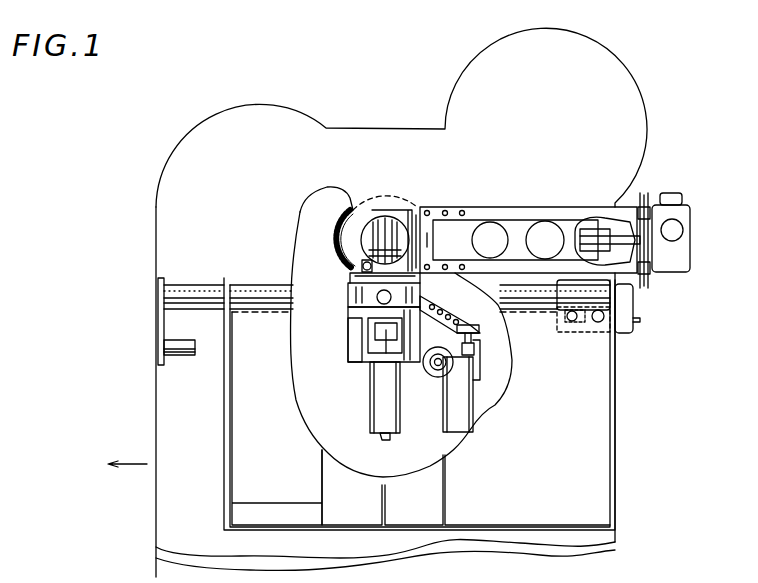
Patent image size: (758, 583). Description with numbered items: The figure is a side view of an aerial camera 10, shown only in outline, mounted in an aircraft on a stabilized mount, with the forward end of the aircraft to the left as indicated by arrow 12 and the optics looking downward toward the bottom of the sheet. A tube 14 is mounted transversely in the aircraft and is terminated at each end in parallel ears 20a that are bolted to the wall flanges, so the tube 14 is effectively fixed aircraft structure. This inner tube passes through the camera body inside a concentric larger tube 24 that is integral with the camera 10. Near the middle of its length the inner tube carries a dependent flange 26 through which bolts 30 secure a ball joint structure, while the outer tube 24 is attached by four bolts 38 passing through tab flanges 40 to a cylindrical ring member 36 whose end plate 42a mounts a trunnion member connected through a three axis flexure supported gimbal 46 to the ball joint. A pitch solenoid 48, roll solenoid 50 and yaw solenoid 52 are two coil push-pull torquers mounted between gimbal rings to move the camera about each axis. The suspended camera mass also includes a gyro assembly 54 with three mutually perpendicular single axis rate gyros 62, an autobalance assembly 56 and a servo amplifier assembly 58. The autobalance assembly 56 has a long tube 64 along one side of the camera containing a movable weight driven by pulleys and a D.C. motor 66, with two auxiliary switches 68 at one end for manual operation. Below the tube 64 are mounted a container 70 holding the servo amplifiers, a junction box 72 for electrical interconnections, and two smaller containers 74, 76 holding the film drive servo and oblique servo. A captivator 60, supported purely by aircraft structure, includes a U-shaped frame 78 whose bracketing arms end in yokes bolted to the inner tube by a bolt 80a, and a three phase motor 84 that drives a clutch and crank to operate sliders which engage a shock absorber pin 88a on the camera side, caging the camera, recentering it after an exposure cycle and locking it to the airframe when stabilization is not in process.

The camera 10 is at (643, 98).
The arrow 12 is at (136, 465).
The tube 14 is at (347, 235).
The ear 20a is at (365, 252).
The larger tube 24 is at (350, 200).
The dependent flange 26 is at (350, 265).
The bolt 30 is at (352, 288).
The cylindrical ring member 36 is at (356, 312).
The bolt 38 is at (436, 300).
The tab flange 40 is at (465, 287).
The end plate 42a is at (372, 330).
The flexure supported gimbal 46 is at (350, 360).
The pitch solenoid 48 is at (478, 400).
The roll solenoid 50 is at (370, 408).
The yaw solenoid 52 is at (437, 377).
The gyro assembly 54 is at (597, 333).
The autobalance assembly 56 is at (160, 323).
The servo amplifier assembly 58 is at (615, 455).
The captivator 60 is at (672, 192).
The single axis rate gyro 62 is at (562, 332).
The long tube 64 is at (264, 287).
The D.C. motor 66 is at (180, 355).
The auxiliary switch 68 is at (640, 320).
The container 70 is at (530, 507).
The junction box 72 is at (282, 484).
The container 74 is at (425, 507).
The container 76 is at (365, 504).
The U-shaped frame 78 is at (513, 207).
The bolt 80a is at (396, 200).
The 3 phase motor 84 is at (683, 230).
The pin 88a is at (618, 228).